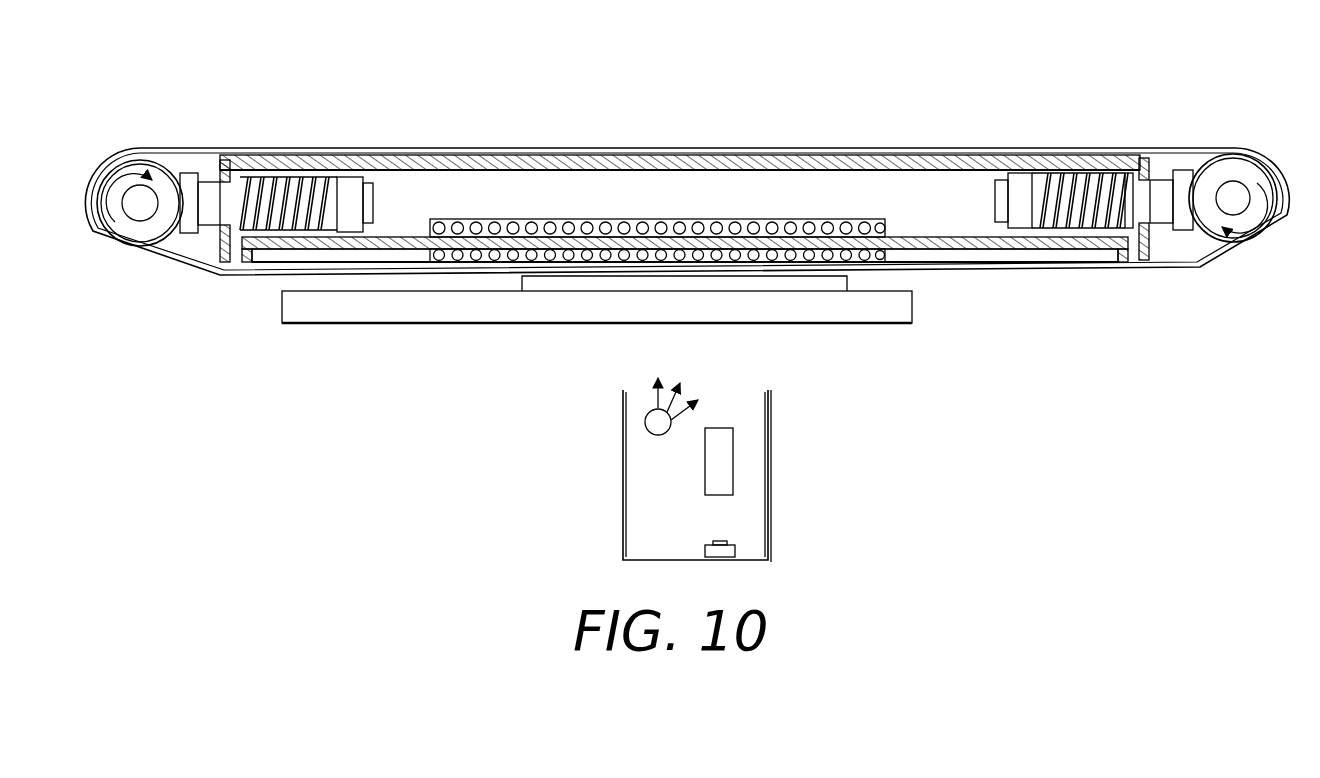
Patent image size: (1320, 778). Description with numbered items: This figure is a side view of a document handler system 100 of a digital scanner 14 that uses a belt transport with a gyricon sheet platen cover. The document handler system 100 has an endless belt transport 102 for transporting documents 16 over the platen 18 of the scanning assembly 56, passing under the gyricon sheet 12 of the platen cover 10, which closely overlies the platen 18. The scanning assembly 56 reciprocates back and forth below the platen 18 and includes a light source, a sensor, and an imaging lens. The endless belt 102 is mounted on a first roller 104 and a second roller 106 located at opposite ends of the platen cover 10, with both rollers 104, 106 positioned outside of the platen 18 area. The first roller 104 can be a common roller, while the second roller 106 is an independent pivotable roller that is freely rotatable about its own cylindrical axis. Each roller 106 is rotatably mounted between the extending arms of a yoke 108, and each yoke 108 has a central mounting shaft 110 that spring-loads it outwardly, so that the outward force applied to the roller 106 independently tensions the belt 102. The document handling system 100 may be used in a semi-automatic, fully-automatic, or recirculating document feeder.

The platen cover 10 is at (602, 177).
The gyricon sheet 12 is at (427, 230).
The digital scanner 14 is at (406, 88).
The document 16 is at (857, 276).
The platen 18 is at (357, 313).
The scanning assembly 56 is at (770, 493).
The document handler system 100 is at (848, 87).
The belt transport 102 is at (165, 262).
The first roller 104 is at (1242, 187).
The second roller 106 is at (93, 218).
The yoke 108 is at (223, 190).
The central mounting shaft 110 is at (252, 180).